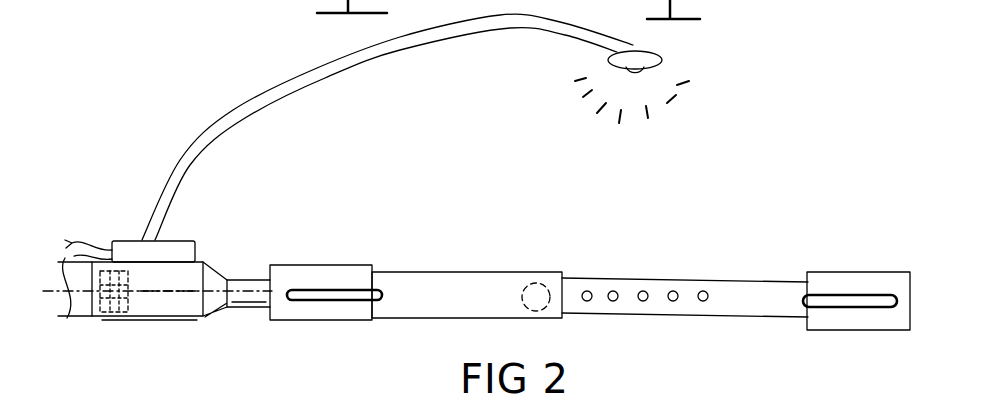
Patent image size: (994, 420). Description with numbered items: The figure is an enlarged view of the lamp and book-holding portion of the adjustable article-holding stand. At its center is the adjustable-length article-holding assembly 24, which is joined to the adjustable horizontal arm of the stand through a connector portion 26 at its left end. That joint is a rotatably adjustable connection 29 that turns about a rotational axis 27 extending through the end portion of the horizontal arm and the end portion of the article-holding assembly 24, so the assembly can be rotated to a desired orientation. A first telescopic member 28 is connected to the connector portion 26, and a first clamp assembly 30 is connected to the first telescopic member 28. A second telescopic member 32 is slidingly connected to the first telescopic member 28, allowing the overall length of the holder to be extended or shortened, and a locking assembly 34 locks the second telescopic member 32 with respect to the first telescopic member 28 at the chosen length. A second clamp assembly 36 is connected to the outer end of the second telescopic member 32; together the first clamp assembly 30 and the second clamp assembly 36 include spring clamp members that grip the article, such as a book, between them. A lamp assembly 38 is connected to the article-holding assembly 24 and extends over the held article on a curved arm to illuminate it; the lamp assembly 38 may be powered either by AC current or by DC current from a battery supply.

The adjustable-length article-holding assembly 24 is at (487, 259).
The connector portion 26 is at (180, 280).
The rotational axis 27 is at (163, 292).
The first telescopic member 28 is at (465, 273).
The rotatably adjustable connection 29 is at (127, 319).
The first clamp assembly 30 is at (313, 323).
The second telescopic member 32 is at (727, 290).
The locking assembly 34 is at (550, 324).
The second clamp assembly 36 is at (835, 266).
The lamp assembly 38 is at (310, 62).